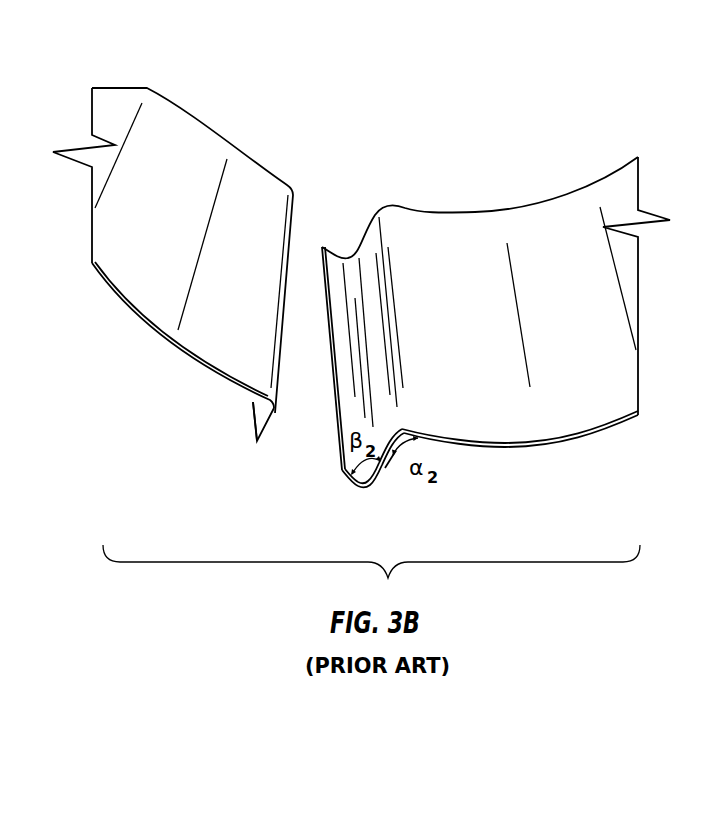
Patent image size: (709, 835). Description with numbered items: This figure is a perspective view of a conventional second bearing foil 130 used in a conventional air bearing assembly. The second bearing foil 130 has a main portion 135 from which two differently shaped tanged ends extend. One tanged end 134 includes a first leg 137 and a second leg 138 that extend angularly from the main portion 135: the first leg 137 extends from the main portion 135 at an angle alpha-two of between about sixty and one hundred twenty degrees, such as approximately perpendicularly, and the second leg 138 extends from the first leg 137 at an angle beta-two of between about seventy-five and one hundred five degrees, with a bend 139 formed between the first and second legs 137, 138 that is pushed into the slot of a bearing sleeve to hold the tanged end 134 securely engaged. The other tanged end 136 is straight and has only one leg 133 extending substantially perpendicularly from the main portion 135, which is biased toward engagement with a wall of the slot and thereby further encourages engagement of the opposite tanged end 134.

The second bearing foil 130 is at (481, 184).
The leg 133 is at (253, 413).
The tanged end 134 is at (404, 498).
The main portion 135 is at (137, 318).
The other tanged end 136 is at (258, 468).
The first leg 137 is at (385, 473).
The second leg 138 is at (355, 483).
The bend 139 is at (378, 488).